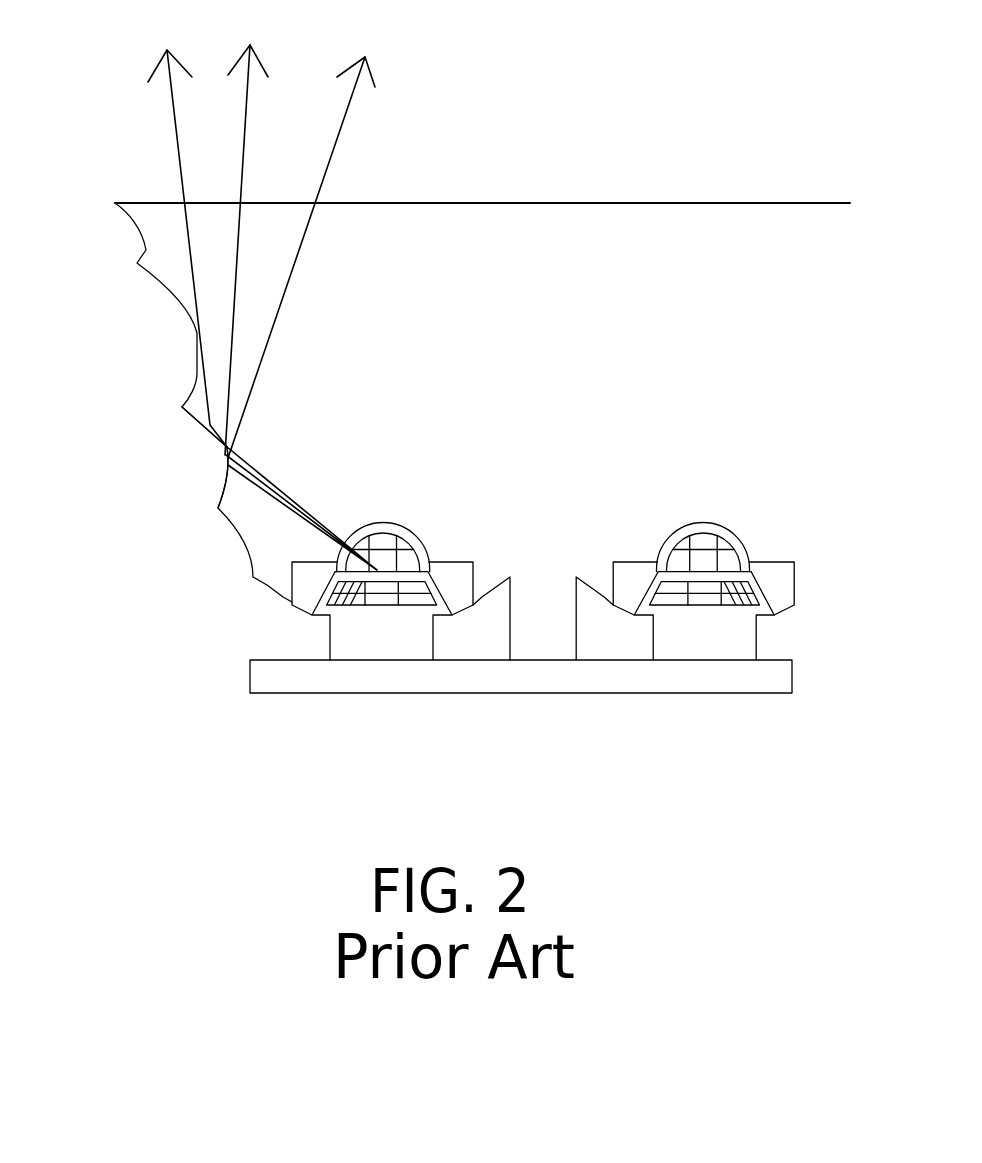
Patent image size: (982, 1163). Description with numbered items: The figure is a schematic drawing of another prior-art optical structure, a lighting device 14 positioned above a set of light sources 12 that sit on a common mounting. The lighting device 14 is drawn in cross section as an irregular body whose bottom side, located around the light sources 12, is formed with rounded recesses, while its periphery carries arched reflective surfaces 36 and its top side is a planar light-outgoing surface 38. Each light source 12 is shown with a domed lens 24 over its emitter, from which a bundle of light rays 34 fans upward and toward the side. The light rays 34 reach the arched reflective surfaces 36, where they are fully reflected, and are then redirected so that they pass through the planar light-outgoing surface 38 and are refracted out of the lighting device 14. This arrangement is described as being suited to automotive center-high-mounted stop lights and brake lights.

The light sources 12 is at (295, 630).
The lighting device 14 is at (165, 357).
The LED lens 24 is at (378, 525).
The light rays 34 is at (300, 512).
The arched reflective surfaces 36 is at (223, 450).
The planar light-outgoing surface 38 is at (483, 202).